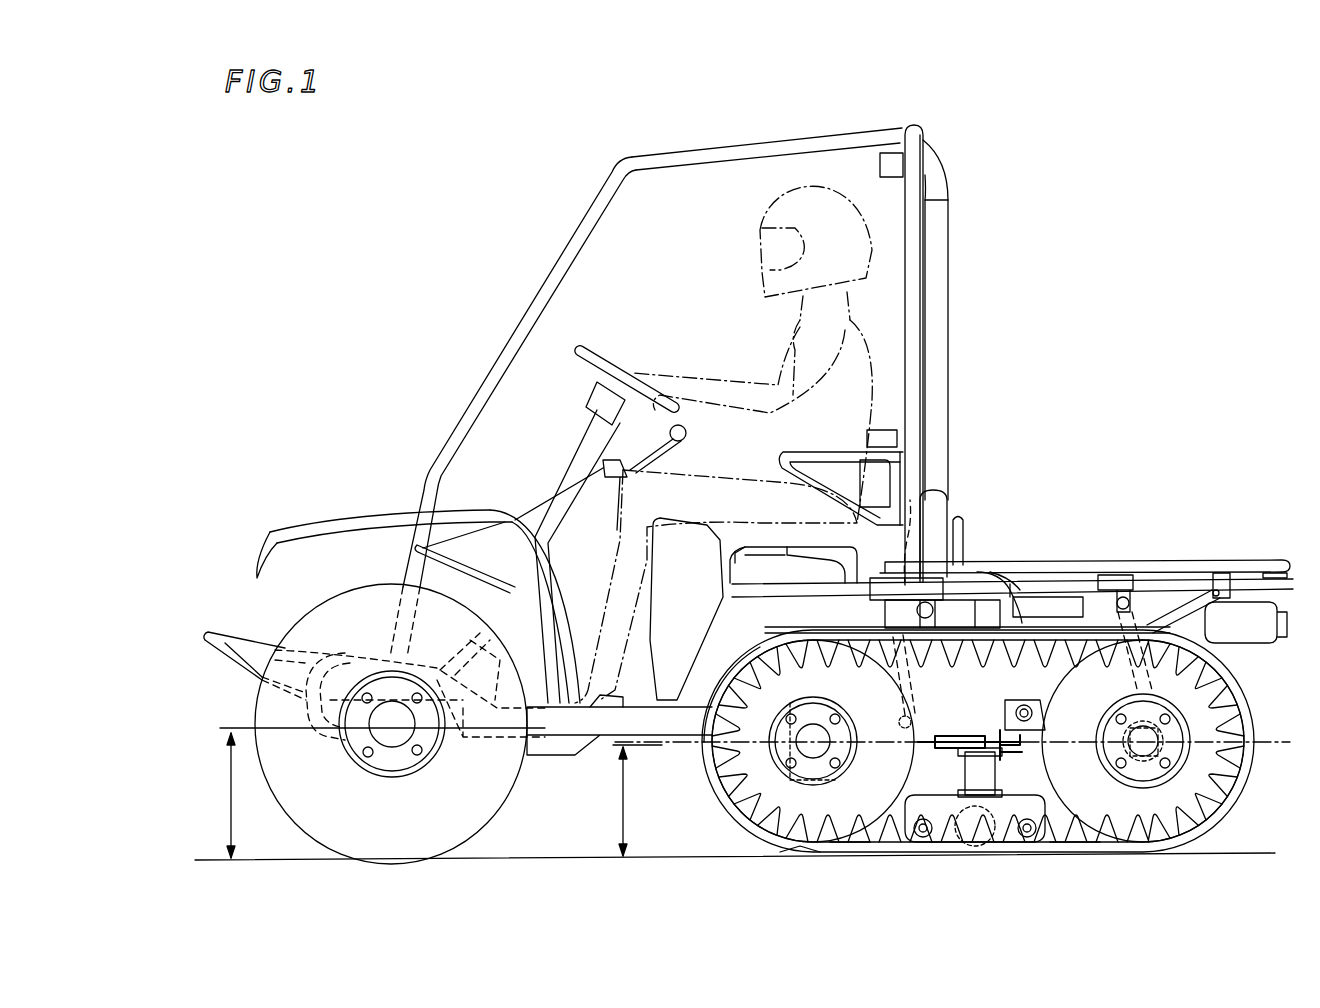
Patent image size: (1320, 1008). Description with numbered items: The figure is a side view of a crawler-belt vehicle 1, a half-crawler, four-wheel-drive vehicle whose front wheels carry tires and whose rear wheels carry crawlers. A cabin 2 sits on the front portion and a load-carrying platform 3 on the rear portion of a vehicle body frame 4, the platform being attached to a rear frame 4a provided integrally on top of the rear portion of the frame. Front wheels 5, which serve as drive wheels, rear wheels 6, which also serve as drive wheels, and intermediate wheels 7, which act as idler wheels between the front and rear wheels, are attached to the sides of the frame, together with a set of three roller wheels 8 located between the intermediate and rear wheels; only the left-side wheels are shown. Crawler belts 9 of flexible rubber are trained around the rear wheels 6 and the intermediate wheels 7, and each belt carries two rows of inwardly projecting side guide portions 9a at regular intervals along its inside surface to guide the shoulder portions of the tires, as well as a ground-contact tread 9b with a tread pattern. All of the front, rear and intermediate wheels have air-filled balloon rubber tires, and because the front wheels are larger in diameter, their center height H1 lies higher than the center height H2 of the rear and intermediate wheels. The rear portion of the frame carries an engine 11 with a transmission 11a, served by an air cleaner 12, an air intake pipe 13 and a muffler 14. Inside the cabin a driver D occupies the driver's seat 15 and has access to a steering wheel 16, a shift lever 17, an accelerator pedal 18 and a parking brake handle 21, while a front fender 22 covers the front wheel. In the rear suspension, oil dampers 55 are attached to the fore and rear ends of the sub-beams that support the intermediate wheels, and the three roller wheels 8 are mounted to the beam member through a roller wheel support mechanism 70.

The crawler-belt vehicle 1 is at (392, 205).
The cabin 2 is at (575, 295).
The load-carrying platform 3 is at (1237, 567).
The vehicle body frame 4 is at (668, 720).
The rear frame 4a is at (1173, 595).
The front wheels 5 is at (333, 828).
The rear wheels 6 is at (1150, 820).
The intermediate wheels 7 is at (852, 805).
The roller wheels 8 is at (1015, 838).
The crawler belts 9 is at (718, 818).
The side guide portions 9a is at (830, 855).
The tread 9b is at (722, 822).
The engine 11 is at (930, 628).
The transmission 11a is at (977, 640).
The air cleaner 12 is at (1050, 605).
The air intake pipe 13 is at (938, 348).
The muffler 14 is at (1252, 645).
The driver's seat 15 is at (723, 567).
The steering wheel 16 is at (595, 370).
The shift lever 17 is at (680, 455).
The accelerator pedal 18 is at (493, 677).
The parking brake handle 21 is at (760, 547).
The front fender 22 is at (323, 527).
The oil dampers 55 is at (1135, 575).
The roller wheel support mechanism 70 is at (1045, 822).
The driver D is at (790, 358).
The center height of the front wheels H1 is at (368, 793).
The center height of the rear wheels and intermediate wheels H2 is at (625, 800).